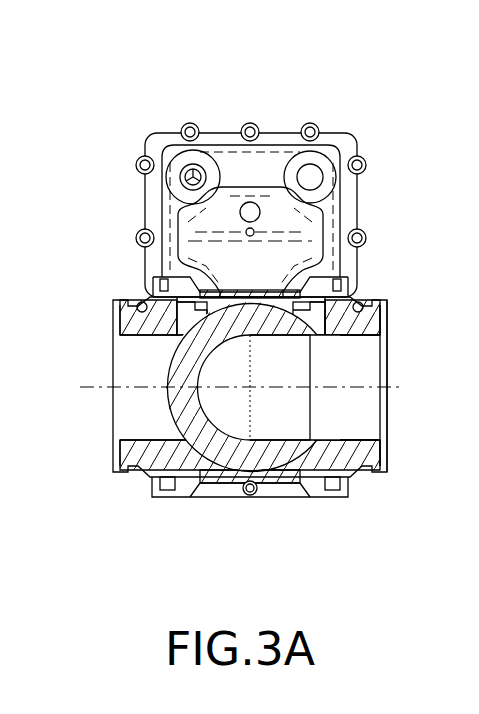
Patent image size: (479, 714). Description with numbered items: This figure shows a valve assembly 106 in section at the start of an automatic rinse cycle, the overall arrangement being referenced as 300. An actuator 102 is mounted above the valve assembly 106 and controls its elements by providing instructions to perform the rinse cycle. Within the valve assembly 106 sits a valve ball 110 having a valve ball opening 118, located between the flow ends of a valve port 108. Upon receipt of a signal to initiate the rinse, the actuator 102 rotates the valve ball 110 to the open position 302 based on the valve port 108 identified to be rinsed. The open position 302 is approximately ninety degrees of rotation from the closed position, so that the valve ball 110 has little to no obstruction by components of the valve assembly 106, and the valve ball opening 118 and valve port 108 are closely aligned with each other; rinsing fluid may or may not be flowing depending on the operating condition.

The valve assembly 300 is at (273, 97).
The actuator 102 is at (320, 168).
The valve assembly 106 is at (223, 495).
The valve port 108 is at (360, 355).
The valve ball 110 is at (192, 440).
The valve ball opening 118 is at (293, 422).
The open position 302 is at (385, 387).